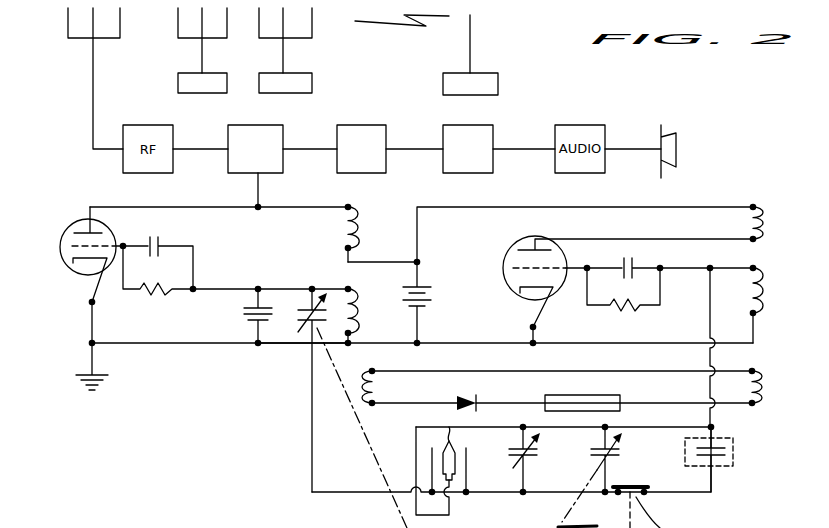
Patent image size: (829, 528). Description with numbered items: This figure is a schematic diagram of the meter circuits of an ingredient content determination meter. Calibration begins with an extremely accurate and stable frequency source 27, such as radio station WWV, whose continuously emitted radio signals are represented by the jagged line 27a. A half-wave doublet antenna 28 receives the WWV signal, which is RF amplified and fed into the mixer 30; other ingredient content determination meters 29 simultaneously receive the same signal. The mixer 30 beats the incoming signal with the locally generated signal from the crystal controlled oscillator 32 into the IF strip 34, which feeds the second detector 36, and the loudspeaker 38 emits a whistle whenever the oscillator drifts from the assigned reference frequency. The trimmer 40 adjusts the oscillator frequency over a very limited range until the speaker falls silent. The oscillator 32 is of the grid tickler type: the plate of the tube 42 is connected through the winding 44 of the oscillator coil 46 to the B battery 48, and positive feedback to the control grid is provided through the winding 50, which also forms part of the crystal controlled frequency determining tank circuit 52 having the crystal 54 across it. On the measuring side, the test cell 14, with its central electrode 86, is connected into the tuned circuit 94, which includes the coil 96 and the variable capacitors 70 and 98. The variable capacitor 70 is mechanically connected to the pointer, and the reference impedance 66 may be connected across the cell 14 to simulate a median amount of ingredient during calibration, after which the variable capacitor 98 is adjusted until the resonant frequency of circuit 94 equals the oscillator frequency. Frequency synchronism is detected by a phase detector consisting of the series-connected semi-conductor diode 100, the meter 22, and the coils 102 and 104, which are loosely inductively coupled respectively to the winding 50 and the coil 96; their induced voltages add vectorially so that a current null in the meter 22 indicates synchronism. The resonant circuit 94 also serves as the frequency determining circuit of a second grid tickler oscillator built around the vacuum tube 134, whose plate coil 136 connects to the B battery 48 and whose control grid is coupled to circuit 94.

The test cell 14 is at (478, 476).
The meter 22 is at (605, 395).
The frequency source 27 is at (498, 81).
The jagged line 27a is at (397, 29).
The half-wave doublet antenna 28 is at (105, 40).
The other ingredient content determination meters 29 is at (259, 83).
The mixer 30 is at (228, 140).
The crystal controlled oscillator 32 is at (213, 317).
The IF strip 34 is at (337, 137).
The second detector 36 is at (443, 137).
The loudspeaker 38 is at (677, 151).
The trimmer 40 is at (298, 318).
The tube 42 is at (62, 263).
The winding 44 is at (350, 228).
The oscillator coil 46 is at (387, 252).
The B battery 48 is at (434, 294).
The winding 50 is at (350, 310).
The tank circuit 52 is at (282, 358).
The crystal 54 is at (242, 313).
The reference impedance 66 is at (733, 455).
The variable capacitor 70 is at (538, 458).
The central electrode 86 is at (449, 427).
The tuned circuit 94 is at (700, 503).
The coil 96 is at (766, 297).
The variable capacitor 98 is at (622, 450).
The semi-conductor diode 100 is at (478, 402).
The coil 102 is at (368, 389).
The coil 104 is at (760, 392).
The vacuum tube 134 is at (523, 260).
The plate coil 136 is at (760, 232).